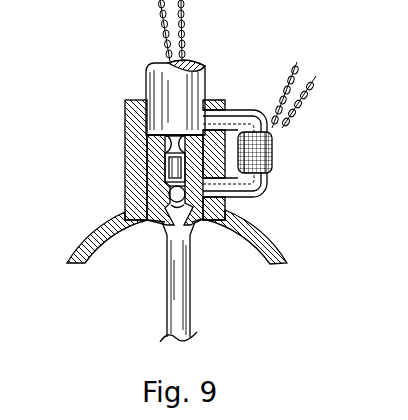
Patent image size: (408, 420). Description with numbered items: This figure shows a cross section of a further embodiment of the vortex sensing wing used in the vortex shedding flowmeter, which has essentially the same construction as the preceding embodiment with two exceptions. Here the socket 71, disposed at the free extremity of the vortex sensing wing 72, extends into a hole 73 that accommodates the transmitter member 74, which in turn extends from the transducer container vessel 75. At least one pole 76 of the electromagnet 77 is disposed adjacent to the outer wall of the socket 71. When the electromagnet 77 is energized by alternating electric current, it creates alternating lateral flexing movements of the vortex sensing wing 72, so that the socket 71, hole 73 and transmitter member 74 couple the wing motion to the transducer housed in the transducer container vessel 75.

The socket 71 is at (162, 198).
The vortex sensing wing 72 is at (180, 297).
The hole 73 is at (165, 140).
The transmitter member 74 is at (178, 170).
The transducer container vessel 75 is at (170, 113).
The pole 76 is at (233, 197).
The electromagnet 77 is at (258, 152).